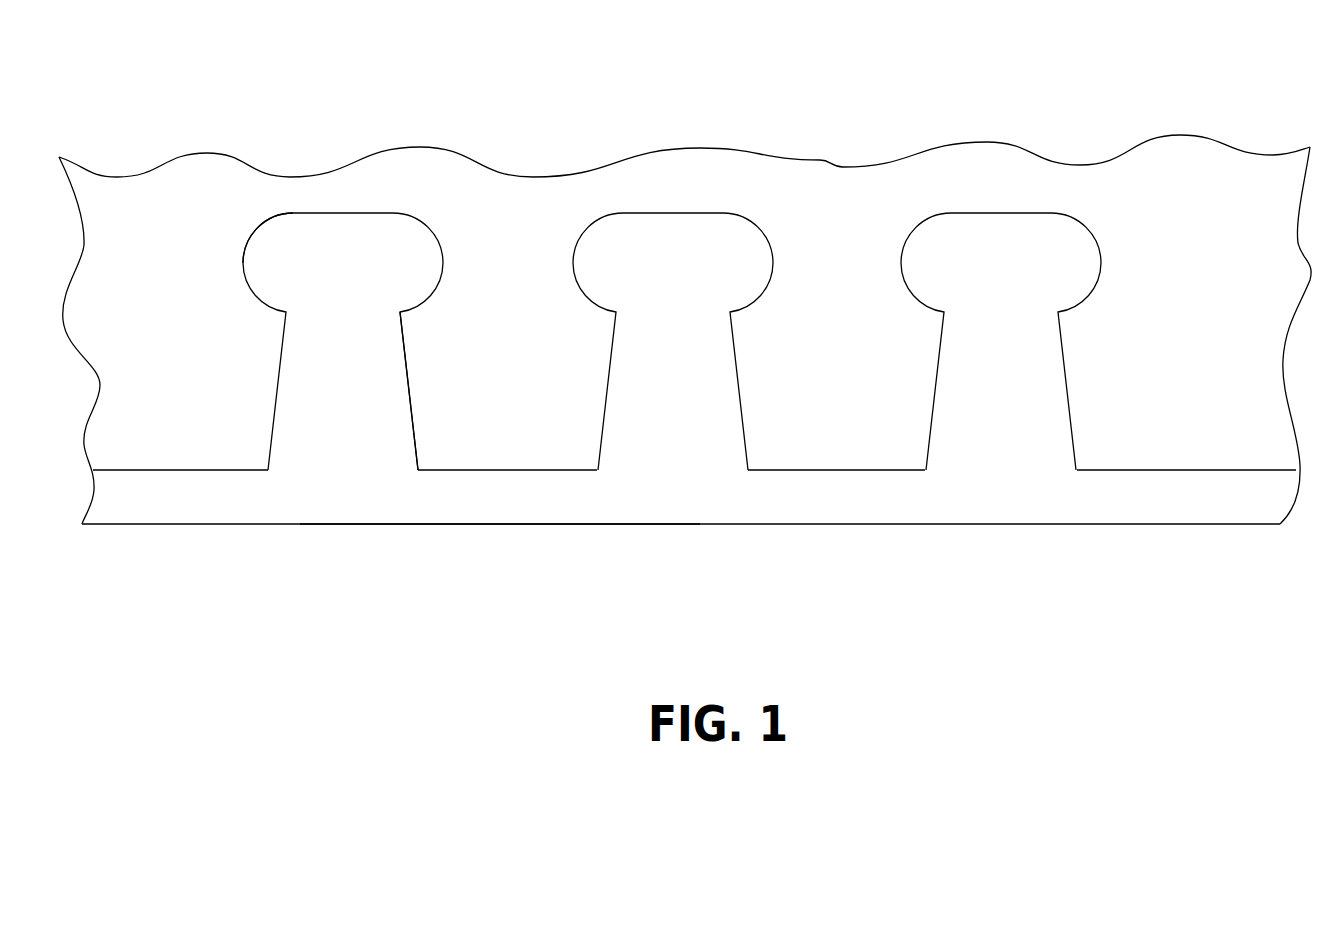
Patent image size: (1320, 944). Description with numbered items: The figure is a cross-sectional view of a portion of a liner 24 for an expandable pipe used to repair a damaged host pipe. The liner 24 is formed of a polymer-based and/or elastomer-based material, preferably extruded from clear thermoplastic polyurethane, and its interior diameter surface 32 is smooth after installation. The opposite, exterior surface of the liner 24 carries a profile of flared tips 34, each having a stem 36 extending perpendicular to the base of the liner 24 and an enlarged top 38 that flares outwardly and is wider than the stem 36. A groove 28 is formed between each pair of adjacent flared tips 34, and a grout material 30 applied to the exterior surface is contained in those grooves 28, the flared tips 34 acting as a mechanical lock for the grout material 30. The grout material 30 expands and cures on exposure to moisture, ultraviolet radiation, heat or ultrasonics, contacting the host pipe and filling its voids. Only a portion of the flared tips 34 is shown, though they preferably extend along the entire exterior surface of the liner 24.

The liner 24 is at (845, 526).
The grooves 28 is at (196, 401).
The grout material 30 is at (1186, 188).
The interior diameter surface 32 is at (475, 527).
The flared tips 34 is at (380, 213).
The stem 36 is at (406, 337).
The enlarged top 38 is at (243, 252).